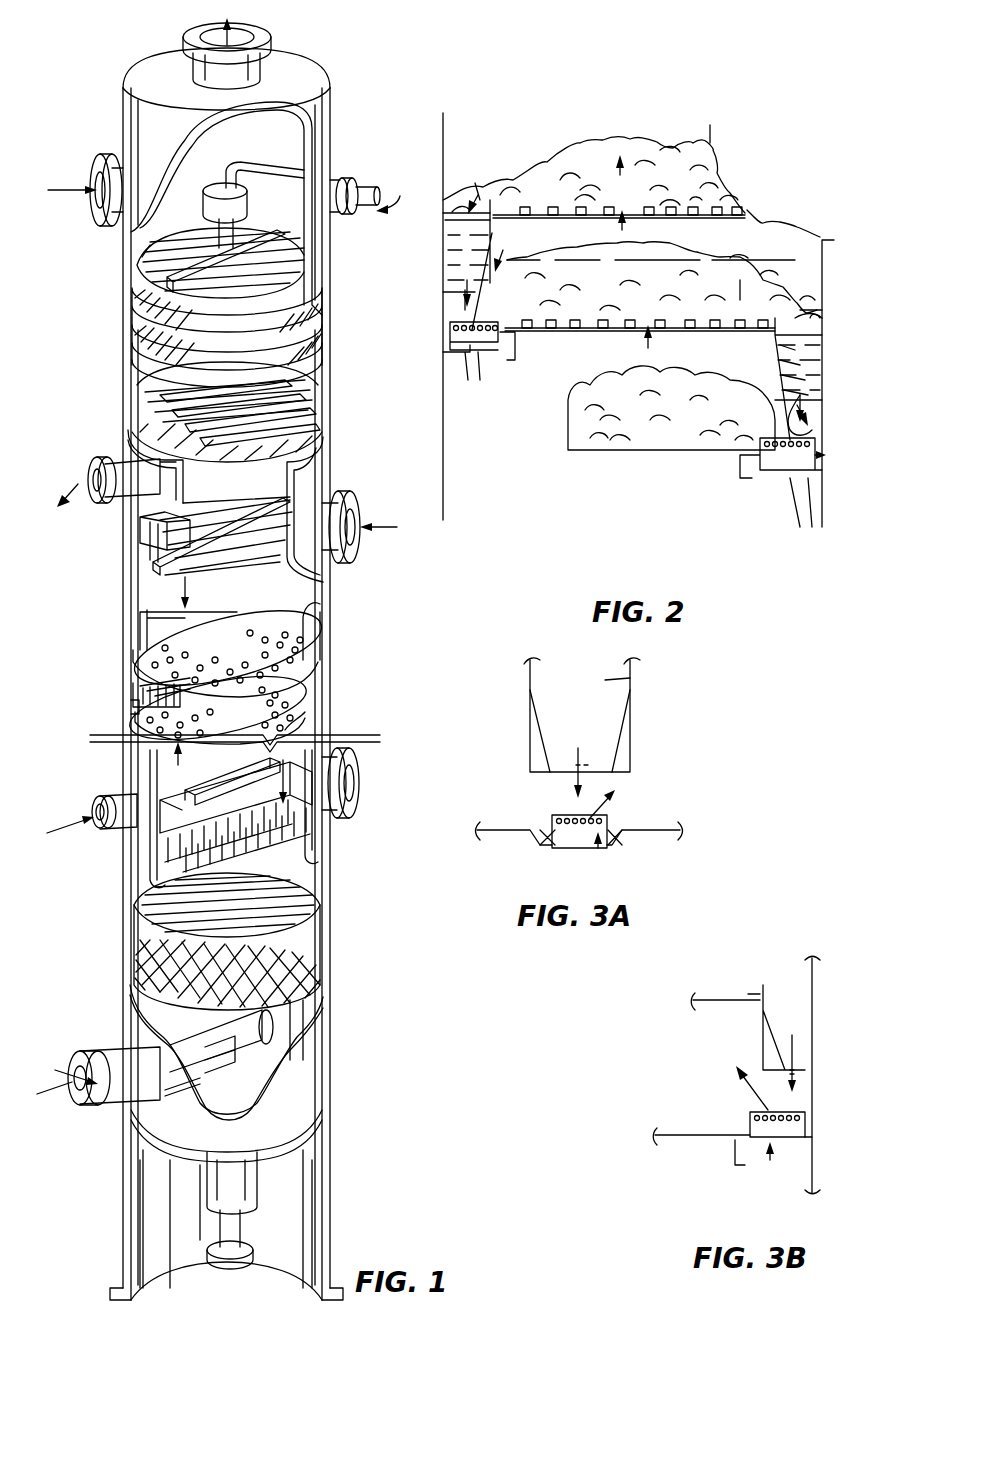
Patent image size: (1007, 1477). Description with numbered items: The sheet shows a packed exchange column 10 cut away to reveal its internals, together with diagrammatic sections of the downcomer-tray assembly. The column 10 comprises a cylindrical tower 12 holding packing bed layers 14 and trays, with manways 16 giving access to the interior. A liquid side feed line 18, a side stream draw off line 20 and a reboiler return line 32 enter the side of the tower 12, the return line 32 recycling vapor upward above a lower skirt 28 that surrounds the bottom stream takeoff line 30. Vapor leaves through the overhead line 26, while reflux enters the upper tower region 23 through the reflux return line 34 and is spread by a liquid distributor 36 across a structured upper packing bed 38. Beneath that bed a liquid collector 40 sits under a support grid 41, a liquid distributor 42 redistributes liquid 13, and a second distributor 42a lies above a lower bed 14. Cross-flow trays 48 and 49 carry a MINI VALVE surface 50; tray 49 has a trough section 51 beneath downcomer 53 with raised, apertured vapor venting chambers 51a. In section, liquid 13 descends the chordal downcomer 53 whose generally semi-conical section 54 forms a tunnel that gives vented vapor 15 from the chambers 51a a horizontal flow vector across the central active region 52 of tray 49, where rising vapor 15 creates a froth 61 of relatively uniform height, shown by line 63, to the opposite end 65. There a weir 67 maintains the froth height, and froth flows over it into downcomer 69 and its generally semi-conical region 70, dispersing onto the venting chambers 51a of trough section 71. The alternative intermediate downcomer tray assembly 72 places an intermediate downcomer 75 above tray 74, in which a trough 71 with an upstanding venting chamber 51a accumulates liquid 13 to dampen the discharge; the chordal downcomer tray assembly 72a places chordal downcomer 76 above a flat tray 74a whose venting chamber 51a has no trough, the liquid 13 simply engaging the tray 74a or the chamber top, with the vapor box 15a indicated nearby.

In FIG. 1, the exchange column 10 is at (340, 95).
In FIG. 1, the cylindrical tower 12 is at (328, 153).
In FIG. 2, the cylindrical tower 12 is at (824, 242).
In FIG. 3B, the cylindrical tower 12 is at (812, 973).
In FIG. 1, the liquid 13 is at (290, 770).
In FIG. 2, the liquid 13 is at (478, 198).
In FIG. 3A, the liquid 13 is at (578, 750).
In FIG. 3B, the liquid 13 is at (800, 1043).
In FIG. 1, the packing bed layers 14 is at (300, 312).
In FIG. 1, the vapor 15 is at (238, 36).
In FIG. 2, the vapor 15 is at (502, 318).
In FIG. 3A, the vapor 15 is at (598, 850).
In FIG. 3B, the vapor 15 is at (752, 1086).
In FIG. 3A, the vapor box 15a is at (570, 845).
In FIG. 1, the manways 16 is at (95, 172).
In FIG. 1, the liquid side feed line 18 is at (115, 828).
In FIG. 1, the side stream draw off line 20 is at (110, 470).
In FIG. 1, the upper tower region 23 is at (132, 340).
In FIG. 1, the overhead line 26 is at (268, 40).
In FIG. 1, the lower skirt 28 is at (305, 1236).
In FIG. 1, the bottom stream takeoff line 30 is at (253, 1195).
In FIG. 1, the reboiler return line 32 is at (125, 1085).
In FIG. 1, the reflux return line 34 is at (345, 185).
In FIG. 1, the liquid distributor 36 is at (150, 265).
In FIG. 1, the upper packing bed 38 is at (135, 300).
In FIG. 1, the liquid collector 40 is at (305, 428).
In FIG. 1, the support grid 41 is at (322, 362).
In FIG. 1, the liquid distributor 42 is at (166, 566).
In FIG. 1, the distributor 42a is at (292, 866).
In FIG. 1, the cross-flow tray 48 is at (245, 663).
In FIG. 2, the cross-flow tray 48 is at (742, 212).
In FIG. 1, the cross-flow tray 49 is at (248, 721).
In FIG. 2, the cross-flow tray 49 is at (665, 328).
In FIG. 1, the MINI VALVE surface 50 is at (300, 652).
In FIG. 1, the trough section 51 is at (138, 688).
In FIG. 2, the trough section 51 is at (476, 352).
In FIG. 1, the vapor venting chambers 51a is at (136, 715).
In FIG. 2, the vapor venting chambers 51a is at (450, 338).
In FIG. 3B, the vapor venting chambers 51a is at (805, 1126).
In FIG. 2, the active region 52 is at (590, 330).
In FIG. 1, the downcomer 53 is at (175, 645).
In FIG. 2, the downcomer 53 is at (452, 262).
In FIG. 2, the generally semi-conical section 54 is at (500, 252).
In FIG. 2, the froth 61 is at (660, 150).
In FIG. 2, the froth height line 63 is at (668, 263).
In FIG. 2, the opposite end 65 is at (770, 348).
In FIG. 2, the weir 67 is at (818, 322).
In FIG. 1, the downcomer 69 is at (288, 732).
In FIG. 2, the downcomer 69 is at (818, 370).
In FIG. 2, the generally semi-conical region 70 is at (812, 429).
In FIG. 2, the trough section 71 is at (826, 457).
In FIG. 3A, the trough section 71 is at (618, 840).
In FIG. 3A, the intermediate downcomer tray assembly 72 is at (524, 762).
In FIG. 3B, the chordal downcomer tray assembly 72a is at (786, 990).
In FIG. 3A, the tray 74 is at (660, 828).
In FIG. 3B, the tray 74a is at (695, 1138).
In FIG. 3A, the intermediate downcomer 75 is at (625, 680).
In FIG. 3B, the chordal downcomer 76 is at (795, 1008).